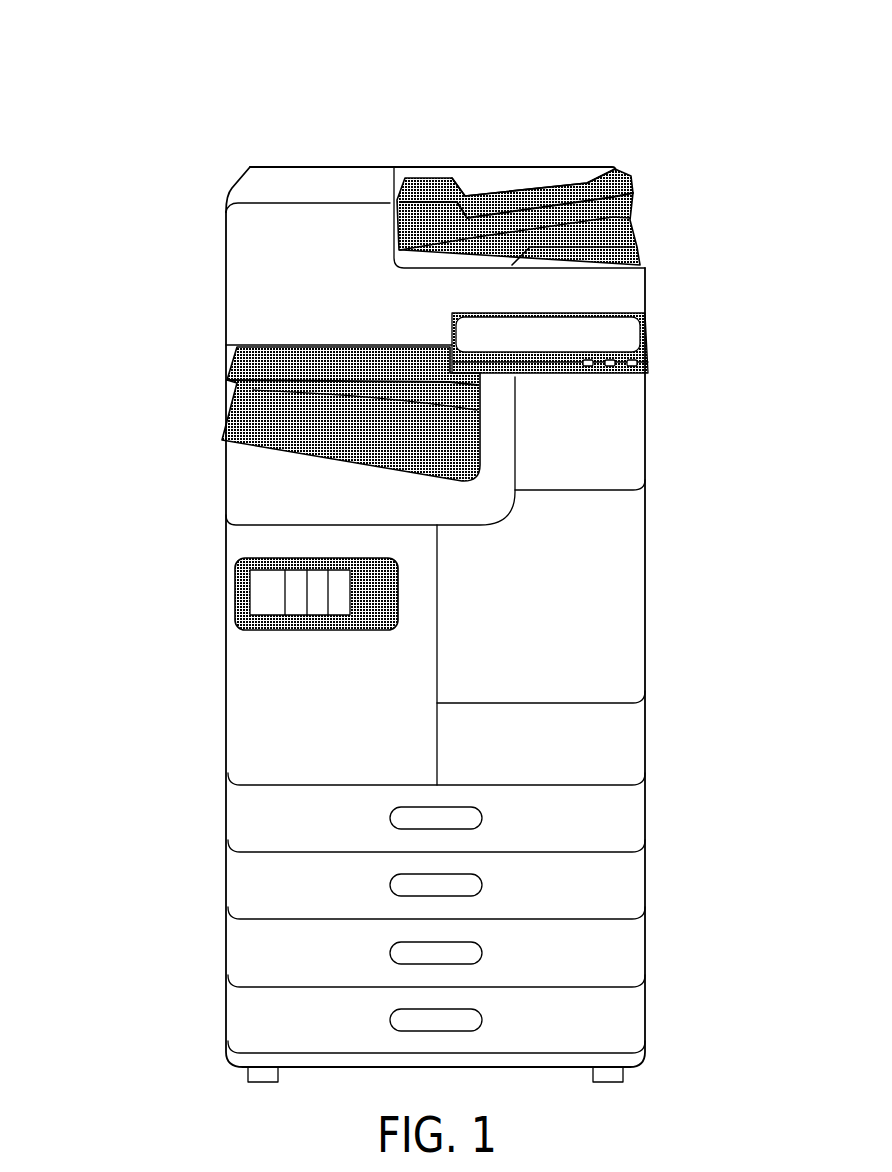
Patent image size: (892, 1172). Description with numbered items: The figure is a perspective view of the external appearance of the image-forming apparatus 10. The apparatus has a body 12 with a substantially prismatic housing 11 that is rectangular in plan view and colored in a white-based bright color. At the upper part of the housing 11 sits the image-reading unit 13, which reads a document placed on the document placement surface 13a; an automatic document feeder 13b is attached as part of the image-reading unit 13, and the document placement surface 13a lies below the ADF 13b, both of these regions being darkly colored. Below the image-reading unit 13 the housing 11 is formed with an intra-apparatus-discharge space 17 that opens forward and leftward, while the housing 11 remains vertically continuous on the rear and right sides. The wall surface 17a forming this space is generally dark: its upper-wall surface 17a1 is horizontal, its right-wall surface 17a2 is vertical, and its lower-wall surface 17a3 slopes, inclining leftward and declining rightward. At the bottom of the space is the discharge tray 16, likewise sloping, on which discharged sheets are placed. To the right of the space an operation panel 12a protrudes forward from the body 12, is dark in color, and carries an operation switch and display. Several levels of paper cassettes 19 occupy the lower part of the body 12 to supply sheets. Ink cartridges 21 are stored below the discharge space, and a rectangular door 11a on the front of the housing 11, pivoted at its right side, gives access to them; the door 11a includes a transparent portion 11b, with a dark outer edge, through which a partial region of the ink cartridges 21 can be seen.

The image-forming apparatus 10 is at (536, 114).
The housing 11 is at (647, 602).
The door 11a is at (247, 730).
The transparent portion 11b is at (257, 563).
The body 12 is at (665, 418).
The operation panel 12a is at (597, 334).
The image-reading unit 13 is at (752, 147).
The document placement surface 13a is at (580, 292).
The automatic document feeder (ADF) 13b is at (577, 164).
The discharge tray 16 is at (267, 420).
The intra-apparatus-discharge space 17 is at (198, 358).
The wall surface 17a is at (323, 112).
The upper-wall surface 17a1 is at (353, 340).
The right-wall surface 17a2 is at (477, 423).
The lower-wall surface 17a3 is at (315, 422).
The paper cassettes 19 is at (680, 775).
The ink cartridges 21 is at (307, 615).